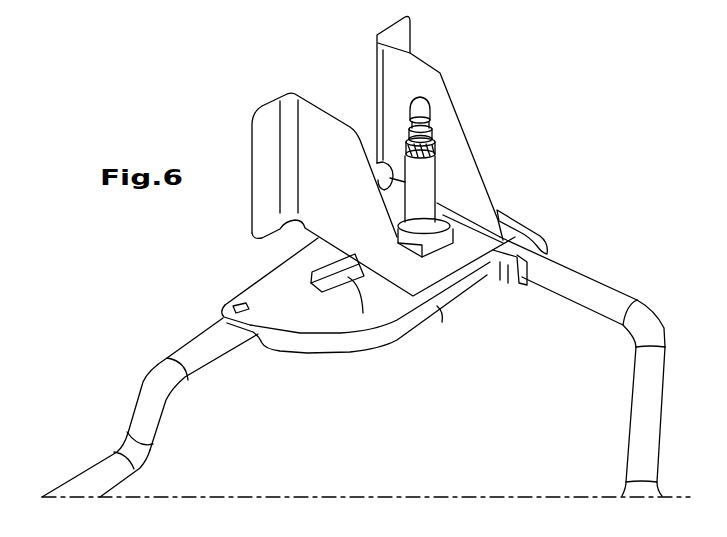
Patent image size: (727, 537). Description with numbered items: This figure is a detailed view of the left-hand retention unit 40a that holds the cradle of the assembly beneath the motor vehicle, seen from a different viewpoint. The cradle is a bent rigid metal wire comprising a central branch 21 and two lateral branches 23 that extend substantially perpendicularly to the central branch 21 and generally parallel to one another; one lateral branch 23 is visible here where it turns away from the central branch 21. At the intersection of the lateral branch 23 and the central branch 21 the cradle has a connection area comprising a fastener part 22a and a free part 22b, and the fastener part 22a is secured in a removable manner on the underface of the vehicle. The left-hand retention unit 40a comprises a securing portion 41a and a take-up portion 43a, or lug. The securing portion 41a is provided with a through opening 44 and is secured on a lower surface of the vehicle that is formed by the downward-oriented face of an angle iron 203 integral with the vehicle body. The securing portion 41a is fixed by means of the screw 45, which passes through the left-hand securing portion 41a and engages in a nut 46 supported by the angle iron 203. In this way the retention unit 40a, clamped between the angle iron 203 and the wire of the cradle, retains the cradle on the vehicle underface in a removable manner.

The central branch 21 is at (102, 477).
The fastener part 22a is at (208, 347).
The free part 22b is at (592, 293).
The lateral branch 23 is at (633, 430).
The left-hand retention unit 40a is at (410, 378).
The securing portion 41a is at (302, 344).
The take-up portion 43a is at (540, 231).
The through opening 44 is at (363, 313).
The screw 45 is at (420, 167).
The nut 46 is at (456, 260).
The angle iron 203 is at (437, 203).